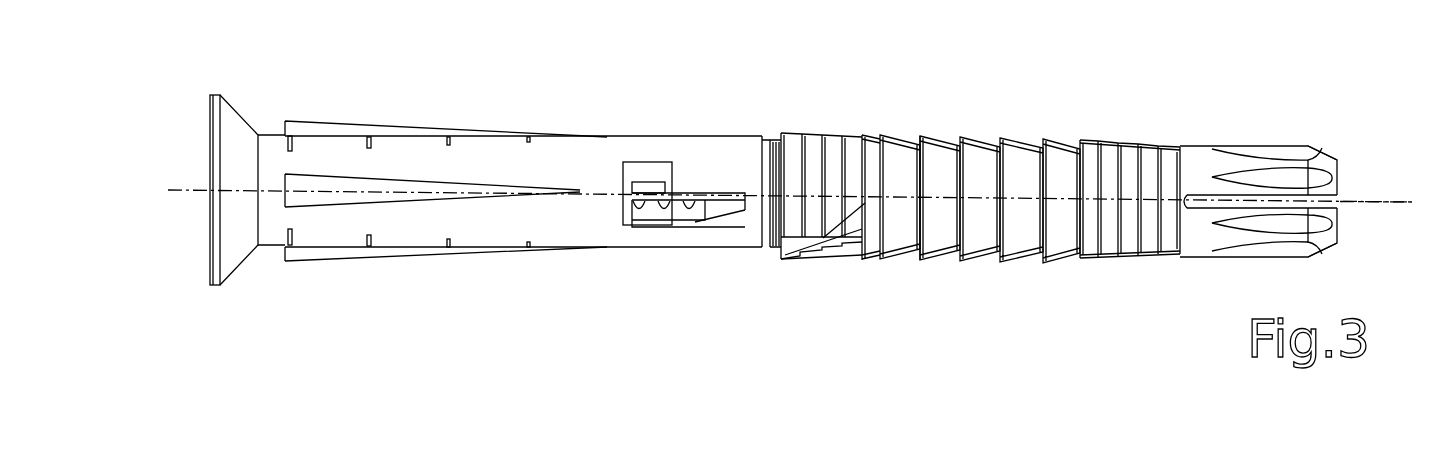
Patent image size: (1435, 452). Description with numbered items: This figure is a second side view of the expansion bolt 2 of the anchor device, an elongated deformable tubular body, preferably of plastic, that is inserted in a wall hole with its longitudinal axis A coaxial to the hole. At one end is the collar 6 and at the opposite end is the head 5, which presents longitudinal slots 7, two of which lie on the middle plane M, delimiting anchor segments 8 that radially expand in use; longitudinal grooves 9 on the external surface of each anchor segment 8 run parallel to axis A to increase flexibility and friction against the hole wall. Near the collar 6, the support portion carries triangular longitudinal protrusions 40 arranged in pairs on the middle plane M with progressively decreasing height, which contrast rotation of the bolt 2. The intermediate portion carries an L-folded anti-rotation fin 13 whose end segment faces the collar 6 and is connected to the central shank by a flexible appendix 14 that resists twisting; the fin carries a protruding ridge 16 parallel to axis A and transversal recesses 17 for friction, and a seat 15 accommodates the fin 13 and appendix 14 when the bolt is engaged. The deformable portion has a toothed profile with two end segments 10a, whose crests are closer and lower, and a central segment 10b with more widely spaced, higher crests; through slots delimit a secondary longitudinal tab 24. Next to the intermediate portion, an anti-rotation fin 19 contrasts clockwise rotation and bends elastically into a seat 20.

The expansion bolt 2 is at (697, 259).
The head 5 is at (1253, 263).
The collar 6 is at (212, 94).
The longitudinal slots 7 is at (1316, 202).
The anchor segments 8 is at (1345, 173).
The longitudinal grooves 9 is at (1288, 181).
The end segments of deformable portion 10a is at (814, 134).
The central segment of deformable portion 10b is at (1006, 189).
The anti-rotation fins 13 is at (643, 215).
The flexible appendix 14 is at (651, 184).
The seat 15 is at (633, 171).
The protruding ridge 16 is at (683, 194).
The transversal recesses 17 is at (697, 209).
The anti-rotation fins 19 is at (823, 241).
The seat 20 is at (850, 216).
The secondary longitudinal tab 24 is at (949, 187).
The longitudinal protrusions 40 is at (331, 128).
The longitudinal axis A is at (190, 189).
The middle plane M is at (1376, 187).